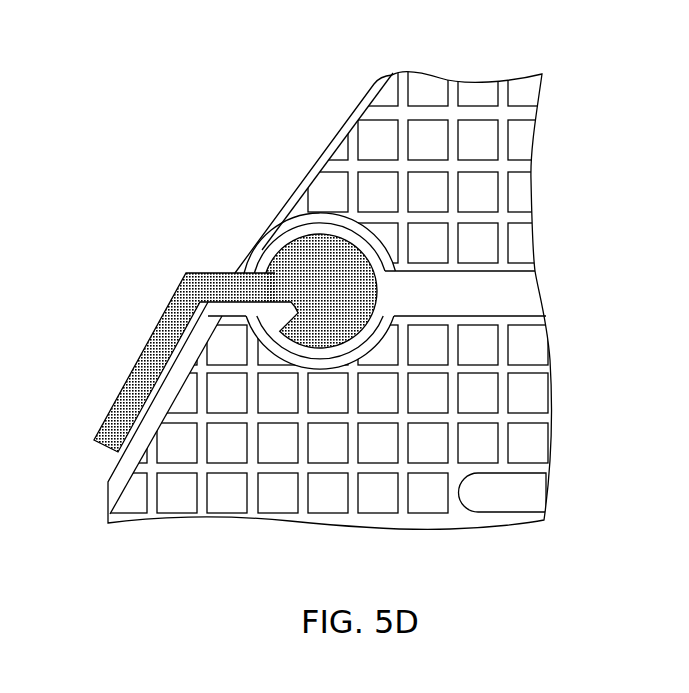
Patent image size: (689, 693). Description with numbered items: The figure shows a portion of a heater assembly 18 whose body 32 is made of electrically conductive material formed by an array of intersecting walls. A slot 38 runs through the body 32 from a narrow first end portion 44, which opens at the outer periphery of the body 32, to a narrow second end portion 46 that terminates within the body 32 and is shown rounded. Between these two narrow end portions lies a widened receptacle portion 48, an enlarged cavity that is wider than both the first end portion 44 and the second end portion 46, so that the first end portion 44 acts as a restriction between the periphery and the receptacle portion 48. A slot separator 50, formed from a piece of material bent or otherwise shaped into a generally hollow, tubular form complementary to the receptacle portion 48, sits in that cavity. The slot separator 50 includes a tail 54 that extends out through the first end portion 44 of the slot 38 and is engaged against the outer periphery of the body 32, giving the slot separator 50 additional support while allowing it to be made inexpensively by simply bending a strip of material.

The heater assembly 18 is at (183, 160).
The body 32 is at (362, 112).
The slot 38 is at (487, 272).
The first end portion 44 is at (228, 325).
The second end portion 46 is at (475, 325).
The receptacle portion 48 is at (318, 215).
The slot separator 50 is at (283, 260).
The tail 54 is at (175, 292).